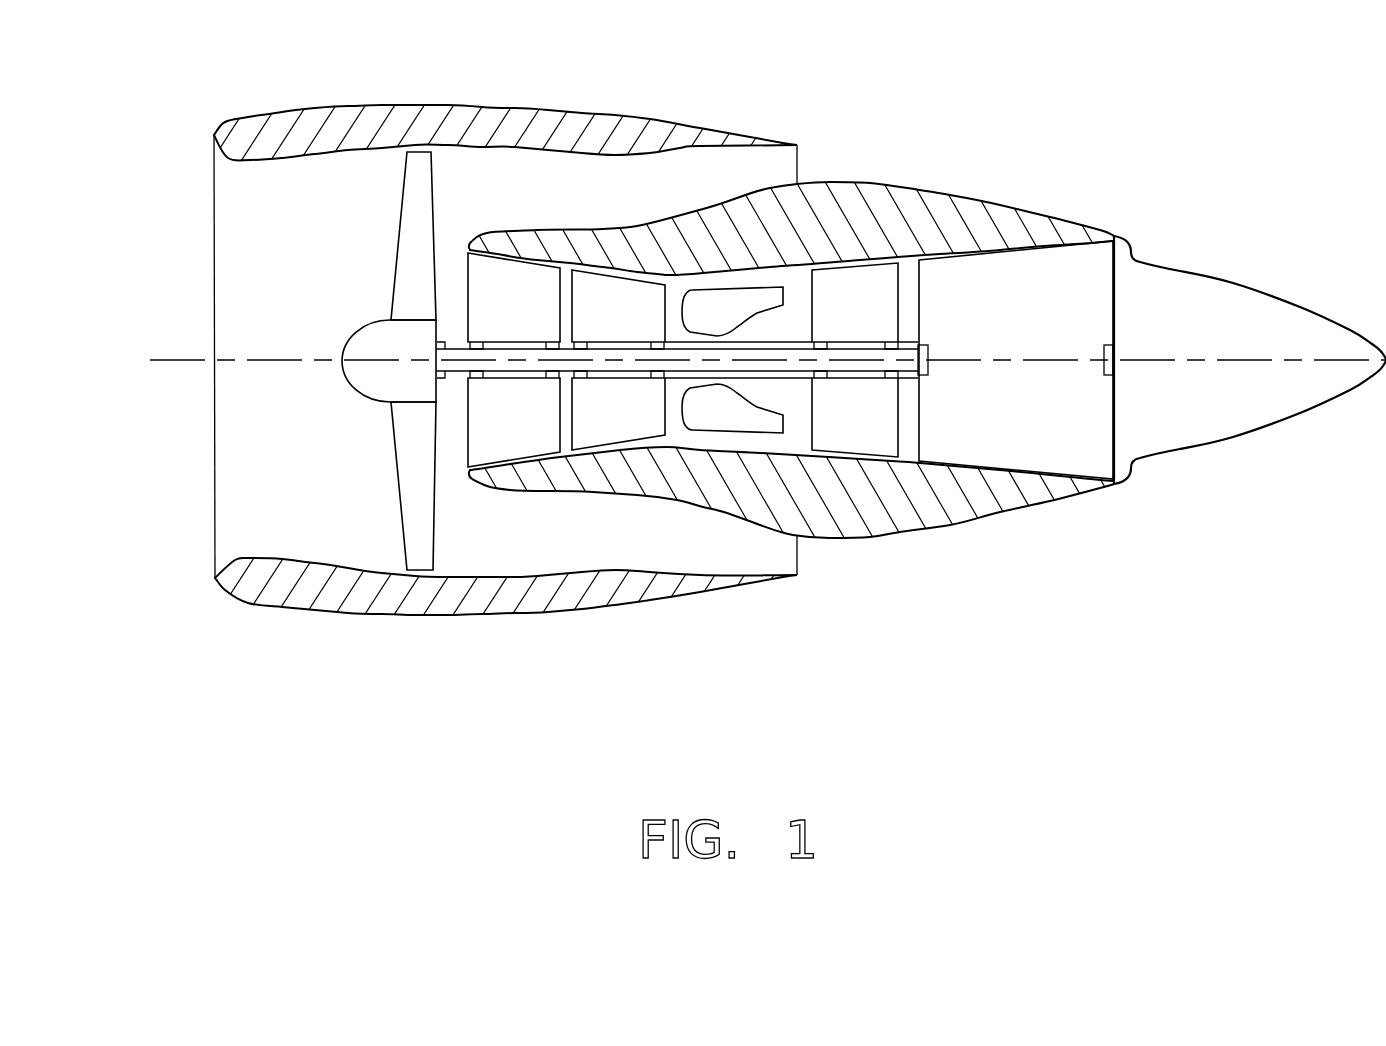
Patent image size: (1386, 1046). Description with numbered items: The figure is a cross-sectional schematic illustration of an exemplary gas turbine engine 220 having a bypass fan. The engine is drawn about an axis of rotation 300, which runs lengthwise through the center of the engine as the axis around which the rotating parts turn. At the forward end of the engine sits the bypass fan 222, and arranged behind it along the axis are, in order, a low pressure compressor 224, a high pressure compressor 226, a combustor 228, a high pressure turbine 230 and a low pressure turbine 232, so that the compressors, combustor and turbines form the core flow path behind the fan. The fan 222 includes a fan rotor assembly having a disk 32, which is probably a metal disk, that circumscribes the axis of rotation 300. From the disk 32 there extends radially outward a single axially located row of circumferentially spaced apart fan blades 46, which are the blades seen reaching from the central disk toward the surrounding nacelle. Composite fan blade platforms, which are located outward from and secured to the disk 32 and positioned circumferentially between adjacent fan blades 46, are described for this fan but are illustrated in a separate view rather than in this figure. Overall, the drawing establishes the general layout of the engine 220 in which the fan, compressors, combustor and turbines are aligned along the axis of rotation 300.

The gas turbine engine 220 is at (749, 342).
The axis of rotation 300 is at (212, 357).
The disk 32 is at (375, 378).
The bypass fan 222 is at (388, 361).
The fan blades 46 is at (418, 553).
The low pressure compressor 224 is at (543, 321).
The high pressure compressor 226 is at (640, 321).
The combustor 228 is at (746, 326).
The high pressure turbine 230 is at (882, 321).
The low pressure turbine 232 is at (1043, 309).